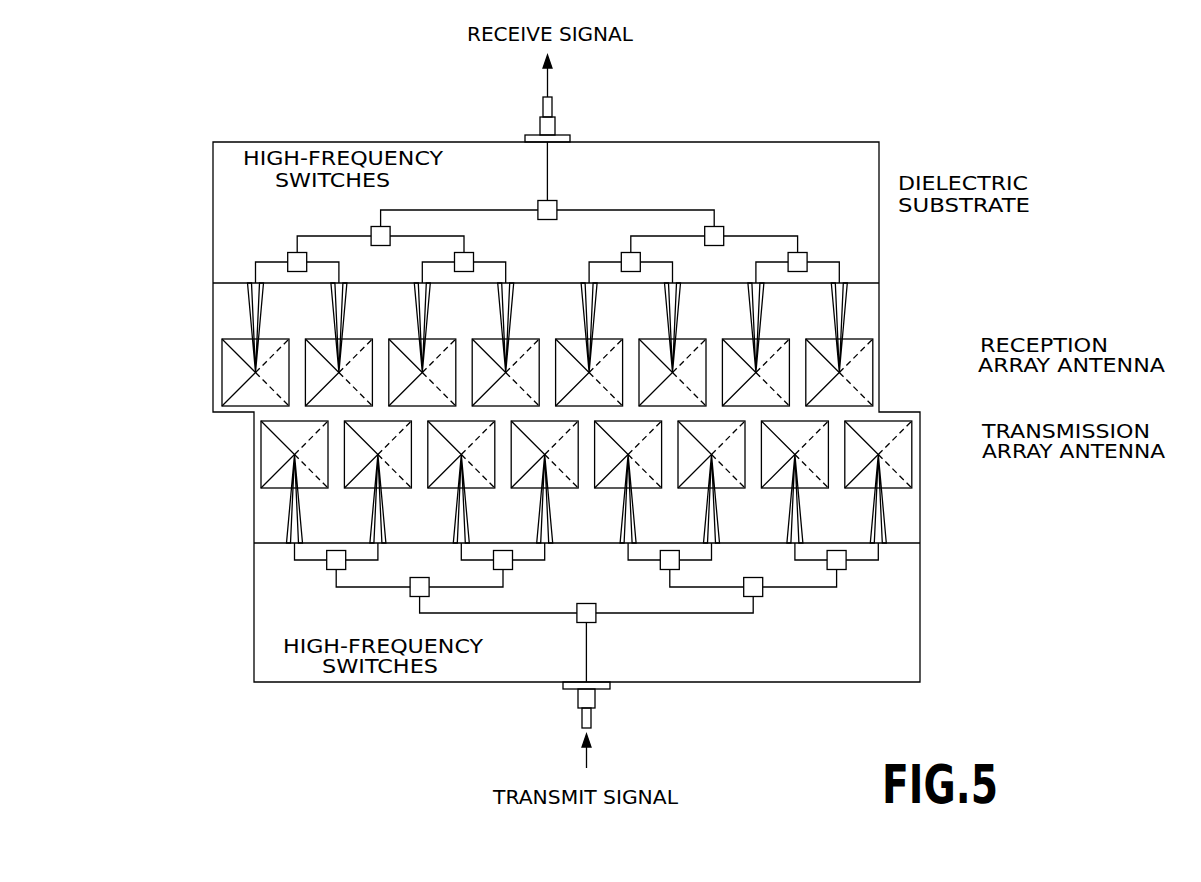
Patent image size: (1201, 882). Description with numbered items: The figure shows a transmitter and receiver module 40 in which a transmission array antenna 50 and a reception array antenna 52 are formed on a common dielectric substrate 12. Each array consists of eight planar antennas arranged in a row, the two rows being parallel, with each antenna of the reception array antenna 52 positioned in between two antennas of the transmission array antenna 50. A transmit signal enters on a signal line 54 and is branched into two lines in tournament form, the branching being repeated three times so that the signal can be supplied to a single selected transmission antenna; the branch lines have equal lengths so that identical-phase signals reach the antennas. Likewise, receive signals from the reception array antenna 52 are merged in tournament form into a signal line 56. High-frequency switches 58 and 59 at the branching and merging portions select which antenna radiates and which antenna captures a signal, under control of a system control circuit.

The dielectric substrate 12 is at (873, 193).
The transmitter and receiver module 40 is at (782, 104).
The transmission array antenna 50 is at (618, 482).
The reception array antenna 52 is at (599, 344).
The signal line 54 is at (590, 637).
The signal line 56 is at (549, 173).
The high-frequency switches 58 is at (326, 566).
The high-frequency switches 59 is at (288, 259).